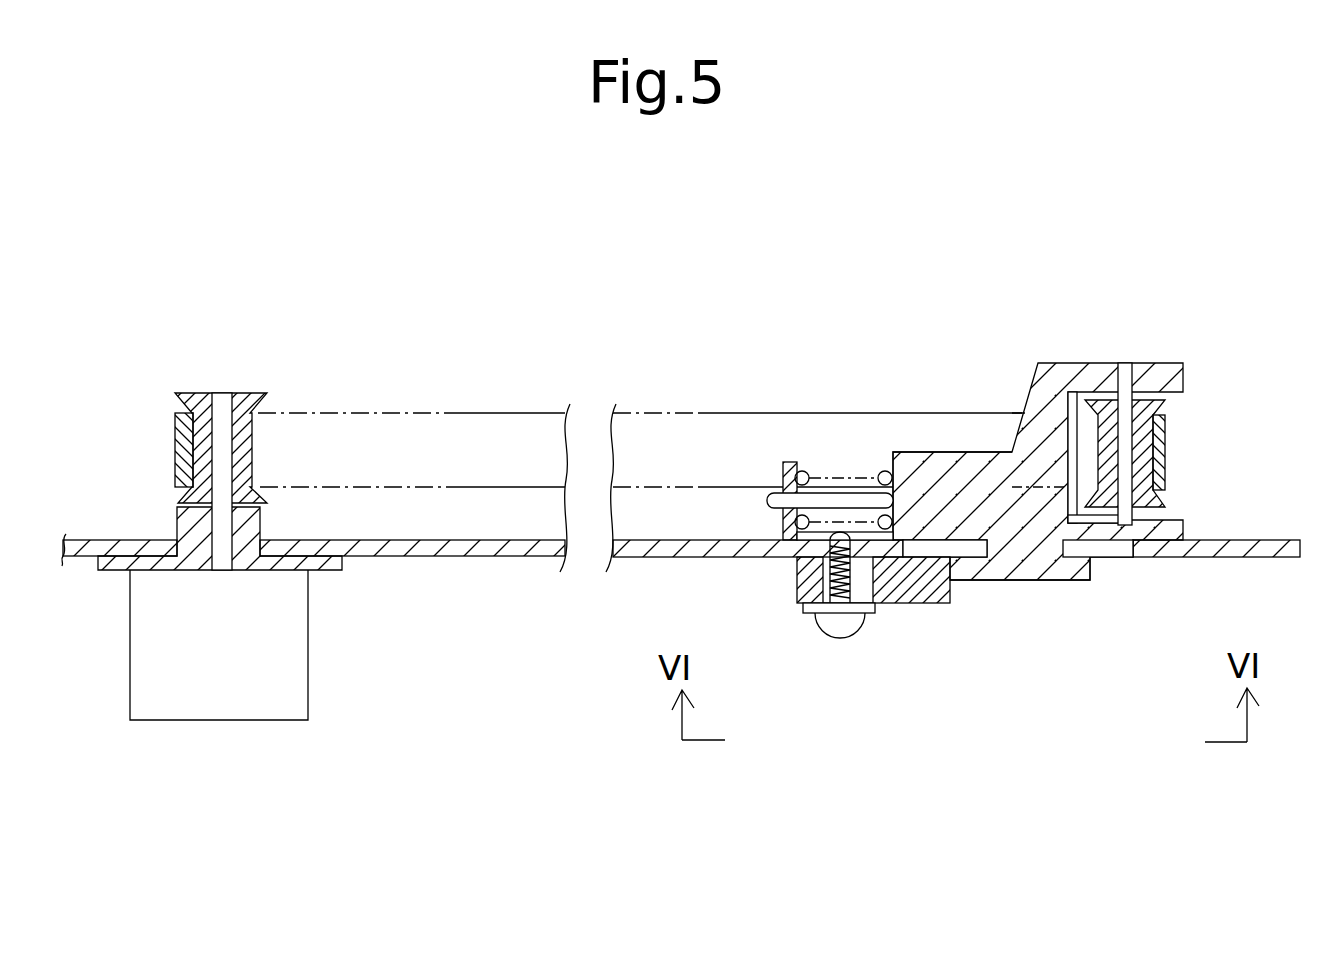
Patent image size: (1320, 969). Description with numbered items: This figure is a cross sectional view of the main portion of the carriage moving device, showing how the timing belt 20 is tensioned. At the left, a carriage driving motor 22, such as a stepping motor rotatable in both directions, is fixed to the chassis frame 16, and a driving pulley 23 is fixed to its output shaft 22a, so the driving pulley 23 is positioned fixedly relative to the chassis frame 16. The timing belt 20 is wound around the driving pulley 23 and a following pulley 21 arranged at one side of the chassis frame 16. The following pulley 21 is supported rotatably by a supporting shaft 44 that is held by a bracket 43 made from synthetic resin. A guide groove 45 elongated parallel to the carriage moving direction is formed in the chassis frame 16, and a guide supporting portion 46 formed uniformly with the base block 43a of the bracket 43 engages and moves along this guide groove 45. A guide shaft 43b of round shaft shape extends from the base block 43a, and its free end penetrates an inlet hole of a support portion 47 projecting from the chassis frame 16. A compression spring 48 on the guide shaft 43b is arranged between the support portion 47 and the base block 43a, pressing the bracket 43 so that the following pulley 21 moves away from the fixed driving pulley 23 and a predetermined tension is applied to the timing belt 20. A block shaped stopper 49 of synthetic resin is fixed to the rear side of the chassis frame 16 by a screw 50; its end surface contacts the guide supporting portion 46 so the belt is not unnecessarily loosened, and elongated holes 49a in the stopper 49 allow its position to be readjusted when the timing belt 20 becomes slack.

The chassis frame 16 is at (483, 577).
The timing belt 20 is at (452, 435).
The following pulley 21 is at (1167, 433).
The carriage driving motor 22 is at (200, 702).
The output shaft 22a is at (223, 400).
The driving pulley 23 is at (245, 435).
The bracket 43 is at (1023, 372).
The base block 43a is at (930, 477).
The guide shaft 43b is at (780, 512).
The supporting shaft 44 is at (1157, 393).
The guide groove 45 is at (987, 562).
The guide supporting portion 46 is at (1043, 565).
The support portion 47 is at (780, 475).
The compression spring 48 is at (818, 473).
The stopper 49 is at (910, 607).
The elongated holes 49a is at (860, 607).
The screw 50 is at (842, 622).